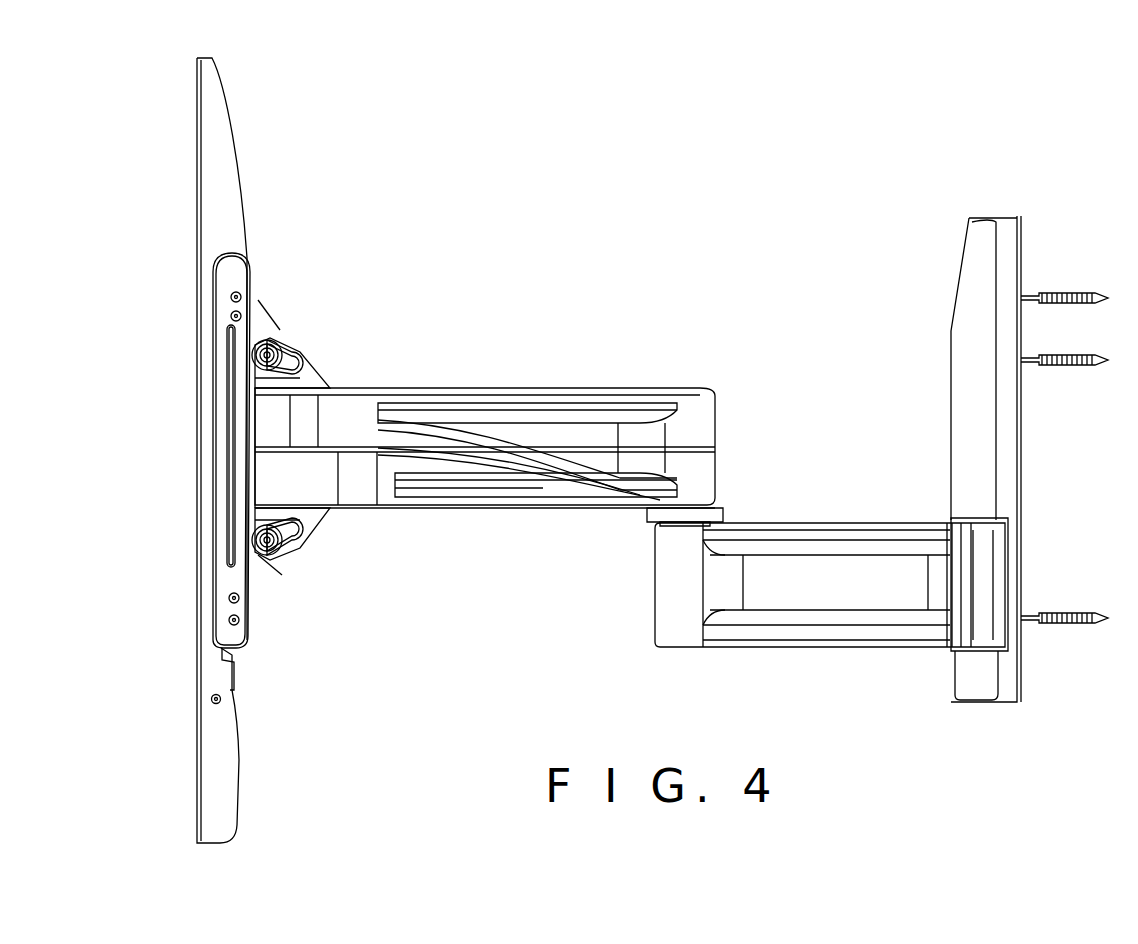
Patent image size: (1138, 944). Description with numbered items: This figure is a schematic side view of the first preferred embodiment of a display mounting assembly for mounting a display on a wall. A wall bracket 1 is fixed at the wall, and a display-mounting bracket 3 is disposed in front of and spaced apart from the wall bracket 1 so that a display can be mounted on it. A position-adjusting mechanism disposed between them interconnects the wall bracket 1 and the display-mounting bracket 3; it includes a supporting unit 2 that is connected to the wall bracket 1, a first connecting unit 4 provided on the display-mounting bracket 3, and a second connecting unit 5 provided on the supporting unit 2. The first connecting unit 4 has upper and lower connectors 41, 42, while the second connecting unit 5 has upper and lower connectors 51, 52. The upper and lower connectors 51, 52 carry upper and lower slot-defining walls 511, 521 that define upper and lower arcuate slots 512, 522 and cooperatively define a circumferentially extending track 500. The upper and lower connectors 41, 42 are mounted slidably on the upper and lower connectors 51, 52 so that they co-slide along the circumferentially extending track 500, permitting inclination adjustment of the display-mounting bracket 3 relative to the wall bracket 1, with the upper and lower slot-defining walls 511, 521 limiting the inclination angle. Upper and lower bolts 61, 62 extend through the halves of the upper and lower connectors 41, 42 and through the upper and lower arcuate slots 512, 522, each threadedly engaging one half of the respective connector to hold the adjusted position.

The wall bracket 1 is at (1012, 202).
The supporting unit 2 is at (685, 385).
The display-mounting bracket 3 is at (180, 147).
The first connecting unit 4 is at (265, 577).
The second connecting unit 5 is at (320, 355).
The upper connector of first connecting unit 41 is at (263, 337).
The lower connector of first connecting unit 42 is at (260, 555).
The upper connector of second connecting unit 51 is at (308, 352).
The lower connector of second connecting unit 52 is at (307, 555).
The upper bolt 61 is at (260, 355).
The lower bolt 62 is at (252, 568).
The circumferentially extending track 500 is at (90, 403).
The upper slot-defining wall 511 is at (270, 378).
The upper arcuate slot 512 is at (263, 310).
The lower slot-defining wall 521 is at (262, 520).
The lower arcuate slot 522 is at (243, 548).